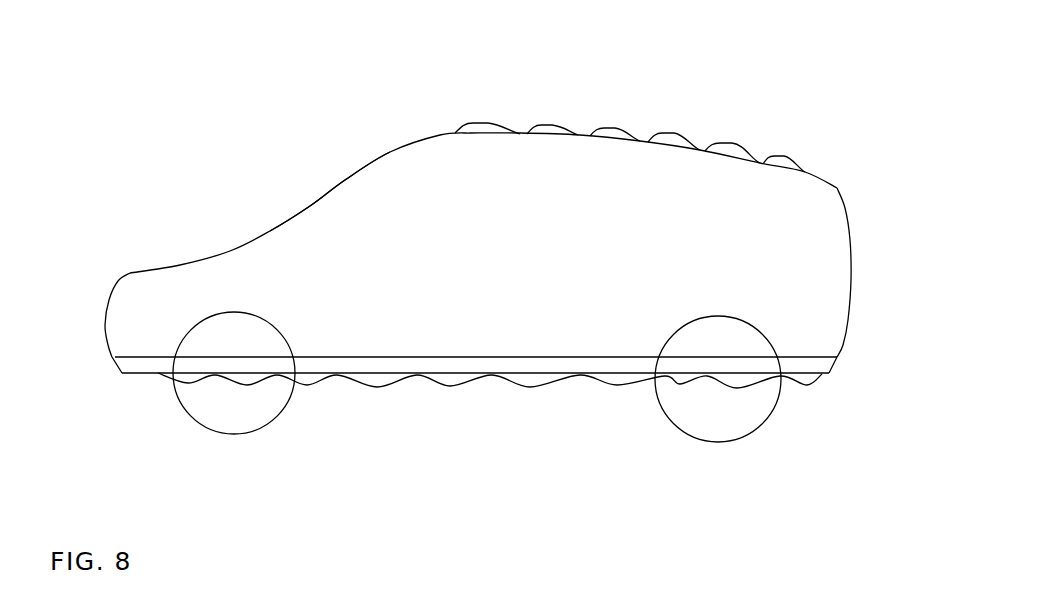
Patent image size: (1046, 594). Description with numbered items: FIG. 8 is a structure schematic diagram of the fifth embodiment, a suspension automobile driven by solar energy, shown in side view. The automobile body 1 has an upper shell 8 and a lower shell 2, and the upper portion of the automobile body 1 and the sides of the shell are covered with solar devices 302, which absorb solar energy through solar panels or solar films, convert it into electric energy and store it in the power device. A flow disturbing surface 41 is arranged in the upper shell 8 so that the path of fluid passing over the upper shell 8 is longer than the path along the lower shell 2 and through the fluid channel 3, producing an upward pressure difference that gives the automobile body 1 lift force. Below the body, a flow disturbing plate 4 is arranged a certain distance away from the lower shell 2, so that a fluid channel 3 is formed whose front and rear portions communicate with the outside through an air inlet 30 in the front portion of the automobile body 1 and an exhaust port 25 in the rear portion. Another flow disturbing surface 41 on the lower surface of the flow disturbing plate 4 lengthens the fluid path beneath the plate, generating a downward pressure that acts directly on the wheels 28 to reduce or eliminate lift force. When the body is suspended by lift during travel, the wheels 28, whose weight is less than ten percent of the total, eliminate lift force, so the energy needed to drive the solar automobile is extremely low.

The automobile body 1 is at (268, 230).
The solar device 302 is at (345, 180).
The upper shell 8 is at (440, 135).
The flow disturbing surface 41 is at (492, 122).
The air inlet 30 is at (115, 365).
The lower shell 2 is at (532, 357).
The fluid channel 3 is at (453, 368).
The flow disturbing plate 4 is at (316, 375).
The wheel 28 is at (240, 428).
The exhaust port 25 is at (829, 375).